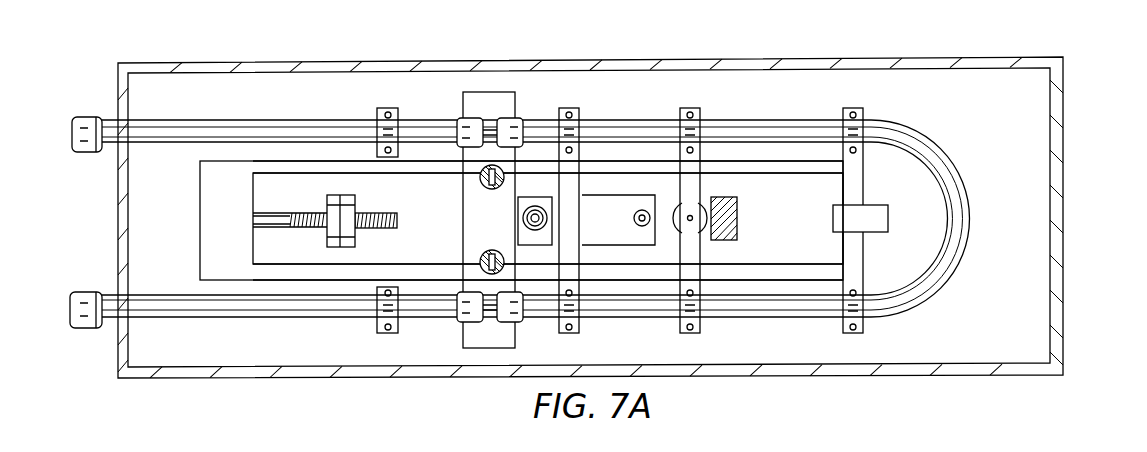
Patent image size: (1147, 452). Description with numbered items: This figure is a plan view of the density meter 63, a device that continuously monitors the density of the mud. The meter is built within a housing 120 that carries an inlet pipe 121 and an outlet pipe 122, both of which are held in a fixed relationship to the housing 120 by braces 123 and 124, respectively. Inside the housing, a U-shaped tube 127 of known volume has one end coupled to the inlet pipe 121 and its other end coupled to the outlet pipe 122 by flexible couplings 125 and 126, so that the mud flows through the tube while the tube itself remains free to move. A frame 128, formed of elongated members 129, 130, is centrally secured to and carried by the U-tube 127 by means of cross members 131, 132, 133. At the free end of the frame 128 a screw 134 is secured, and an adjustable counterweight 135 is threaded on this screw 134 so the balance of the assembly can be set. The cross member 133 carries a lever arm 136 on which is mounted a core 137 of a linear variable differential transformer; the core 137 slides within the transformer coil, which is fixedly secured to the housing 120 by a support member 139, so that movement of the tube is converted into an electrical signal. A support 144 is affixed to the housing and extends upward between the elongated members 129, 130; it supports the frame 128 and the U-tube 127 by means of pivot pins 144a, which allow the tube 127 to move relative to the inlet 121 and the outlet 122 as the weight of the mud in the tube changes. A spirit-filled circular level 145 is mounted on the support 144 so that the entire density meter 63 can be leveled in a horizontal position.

The density meter 63 is at (1084, 130).
The housing 120 is at (845, 378).
The inlet pipe 121 is at (95, 329).
The outlet pipe 122 is at (99, 116).
The brace 123 is at (377, 332).
The brace 124 is at (391, 108).
The flexible coupling 125 is at (490, 322).
The flexible coupling 126 is at (476, 118).
The U-shaped tube 127 is at (898, 122).
The frame 128 is at (498, 220).
The elongated member 129 is at (768, 173).
The elongated member 130 is at (826, 262).
The cross member 131 is at (851, 108).
The cross member 132 is at (686, 108).
The cross member 133 is at (565, 108).
The screw 134 is at (311, 213).
The adjustable counterweight 135 is at (352, 197).
The lever arm 136 is at (594, 208).
The core 137 is at (648, 210).
The support member 139 is at (737, 215).
The support 144 is at (468, 212).
The pivot pins 144a is at (497, 190).
The spirit-filled circular level 145 is at (538, 222).